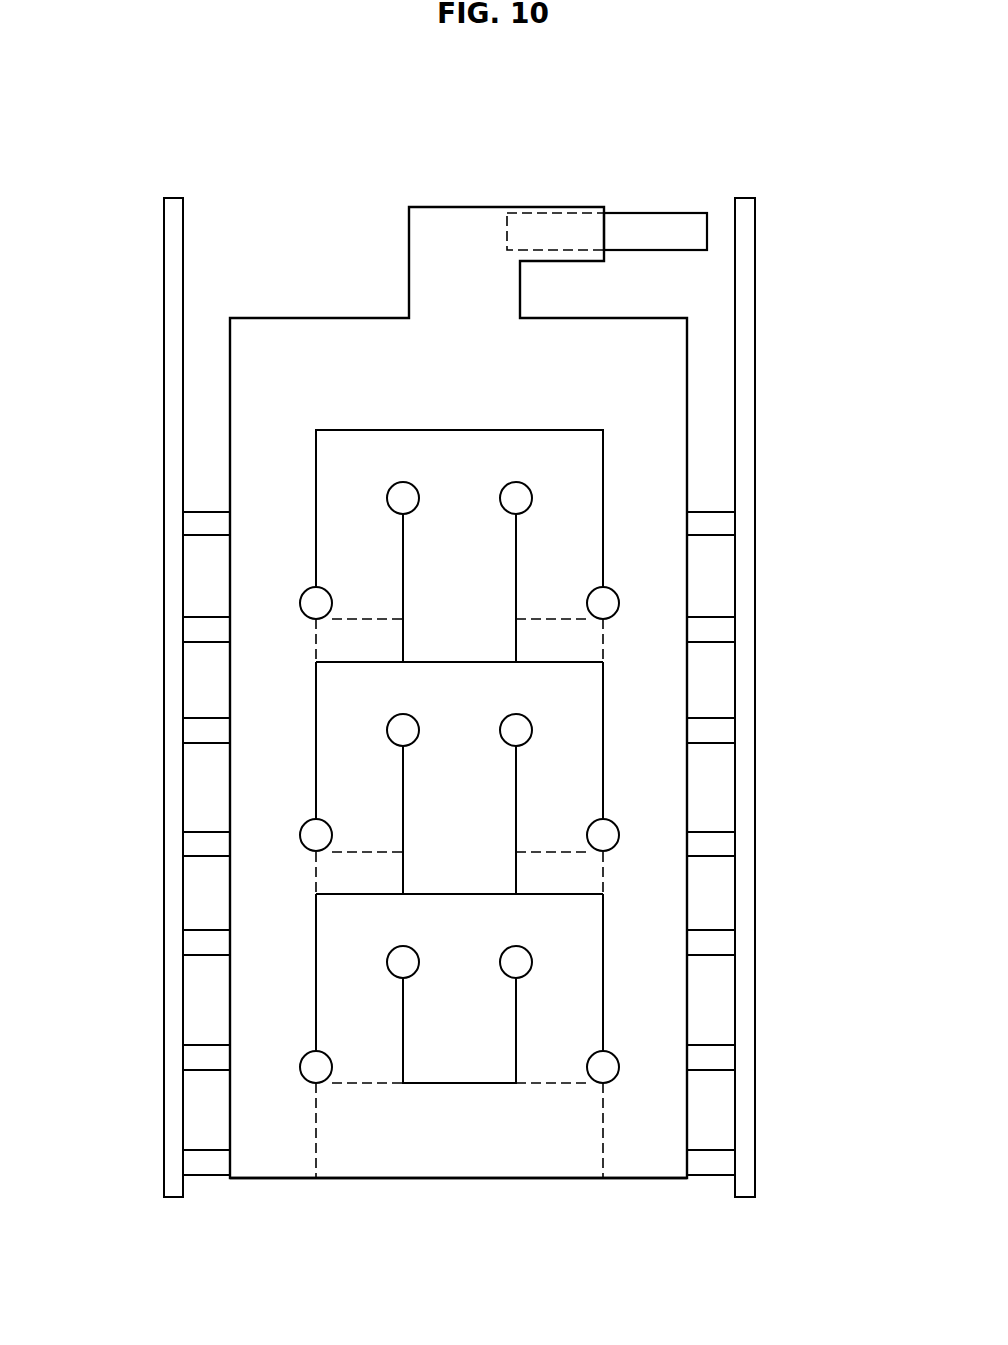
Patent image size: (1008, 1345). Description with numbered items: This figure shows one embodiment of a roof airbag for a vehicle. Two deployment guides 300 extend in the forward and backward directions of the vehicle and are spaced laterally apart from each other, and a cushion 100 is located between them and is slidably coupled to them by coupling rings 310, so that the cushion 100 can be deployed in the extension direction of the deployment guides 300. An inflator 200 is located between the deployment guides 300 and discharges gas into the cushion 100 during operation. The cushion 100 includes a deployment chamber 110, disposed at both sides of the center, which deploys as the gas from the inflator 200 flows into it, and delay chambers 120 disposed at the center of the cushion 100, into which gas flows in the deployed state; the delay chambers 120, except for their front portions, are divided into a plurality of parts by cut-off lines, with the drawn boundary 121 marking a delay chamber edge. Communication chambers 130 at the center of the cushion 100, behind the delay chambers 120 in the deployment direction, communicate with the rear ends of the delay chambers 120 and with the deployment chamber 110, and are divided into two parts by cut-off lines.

The cushion 100 is at (648, 1180).
The deployment chamber 110 is at (646, 464).
The delay chambers 120 is at (352, 541).
The module upper edge 121 is at (316, 466).
The communication chambers 130 is at (572, 636).
The inflator 200 is at (656, 212).
The deployment guides 300 is at (755, 266).
The coupling rings 310 is at (207, 1178).